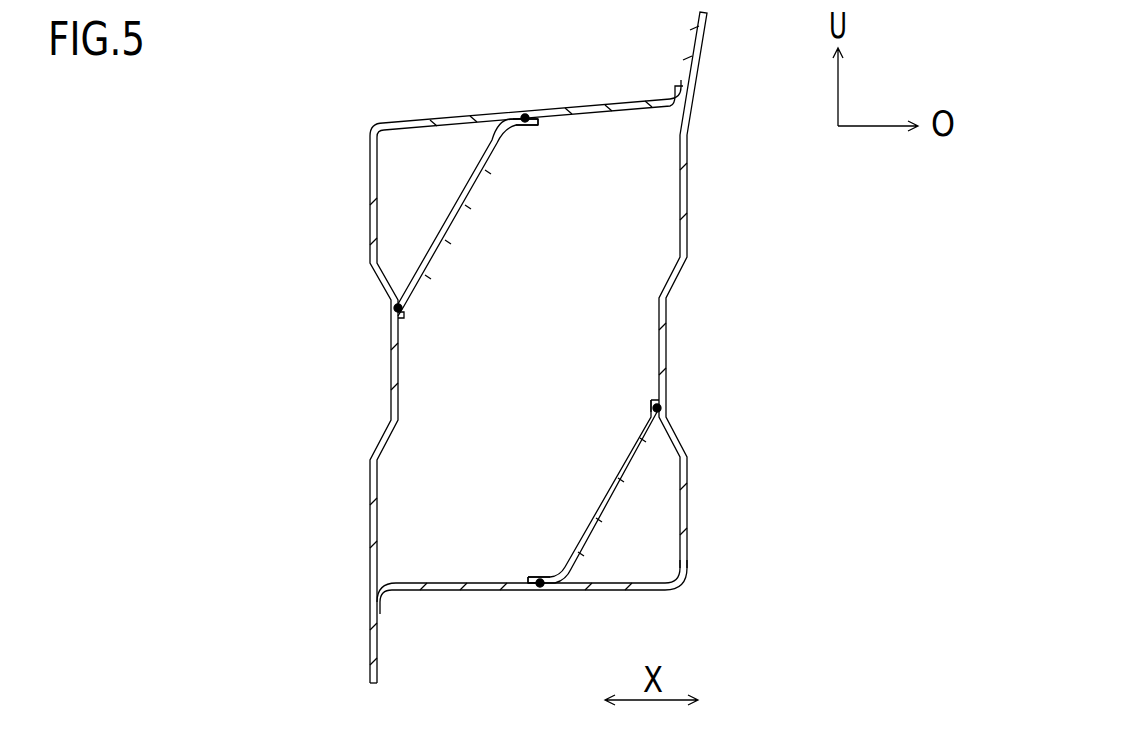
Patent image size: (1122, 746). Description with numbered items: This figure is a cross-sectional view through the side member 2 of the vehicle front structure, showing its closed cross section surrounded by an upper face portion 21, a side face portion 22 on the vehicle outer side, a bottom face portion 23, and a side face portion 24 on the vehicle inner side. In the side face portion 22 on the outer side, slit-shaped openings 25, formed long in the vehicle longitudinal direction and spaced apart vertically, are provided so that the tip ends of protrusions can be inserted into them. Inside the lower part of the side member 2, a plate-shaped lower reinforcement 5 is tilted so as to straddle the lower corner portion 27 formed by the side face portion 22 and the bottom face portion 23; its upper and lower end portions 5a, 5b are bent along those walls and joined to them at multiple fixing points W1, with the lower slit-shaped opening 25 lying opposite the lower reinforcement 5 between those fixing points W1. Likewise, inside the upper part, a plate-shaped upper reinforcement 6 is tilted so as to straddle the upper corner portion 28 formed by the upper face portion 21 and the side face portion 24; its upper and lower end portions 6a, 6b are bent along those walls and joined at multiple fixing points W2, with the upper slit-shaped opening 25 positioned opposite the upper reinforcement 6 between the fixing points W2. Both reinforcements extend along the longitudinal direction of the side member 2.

The side member 2 is at (337, 108).
The upper face portion 21 is at (440, 117).
The side face portion on the vehicle outer side 22 is at (686, 200).
The bottom face portion 23 is at (477, 591).
The side face portion on the vehicle inner side 24 is at (370, 237).
The slit-shaped openings 25 is at (688, 133).
The lower corner portion 27 is at (668, 581).
The upper corner portion 28 is at (387, 133).
The lower reinforcement 5 is at (612, 490).
The upper end portion of the lower reinforcement 5a is at (655, 409).
The lower end portion of the lower reinforcement 5b is at (548, 575).
The upper reinforcement 6 is at (453, 210).
The upper end portion of the upper reinforcement 6a is at (516, 126).
The lower end portion of the upper reinforcement 6b is at (404, 308).
The fixing points W1 is at (660, 408).
The fixing points W2 is at (525, 116).